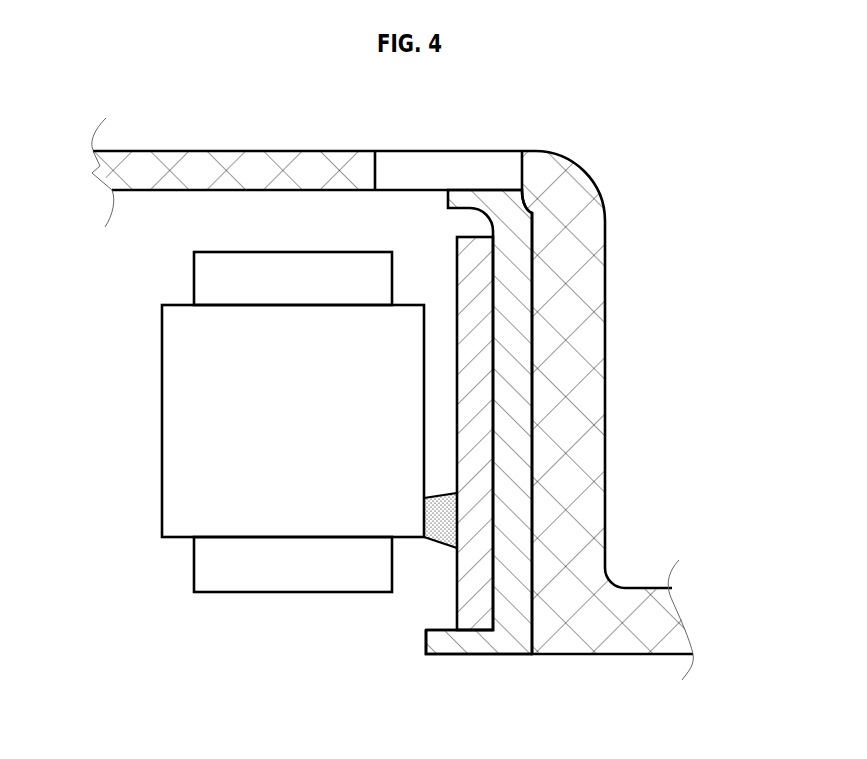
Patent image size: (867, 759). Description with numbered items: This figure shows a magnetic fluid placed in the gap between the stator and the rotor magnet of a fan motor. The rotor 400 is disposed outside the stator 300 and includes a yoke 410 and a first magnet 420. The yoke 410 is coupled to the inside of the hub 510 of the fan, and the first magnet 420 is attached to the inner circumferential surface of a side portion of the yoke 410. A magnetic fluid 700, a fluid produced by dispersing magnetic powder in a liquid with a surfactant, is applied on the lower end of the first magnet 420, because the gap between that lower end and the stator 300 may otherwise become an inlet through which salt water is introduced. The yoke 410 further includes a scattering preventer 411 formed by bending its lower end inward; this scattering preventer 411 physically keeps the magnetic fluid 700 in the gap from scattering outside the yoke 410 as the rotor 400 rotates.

The stator 300 is at (158, 415).
The rotor 400 is at (700, 260).
The yoke 410 is at (513, 256).
The scattering preventer 411 is at (467, 643).
The first magnet 420 is at (480, 358).
The hub 510 is at (573, 183).
The magnetic fluid 700 is at (444, 545).